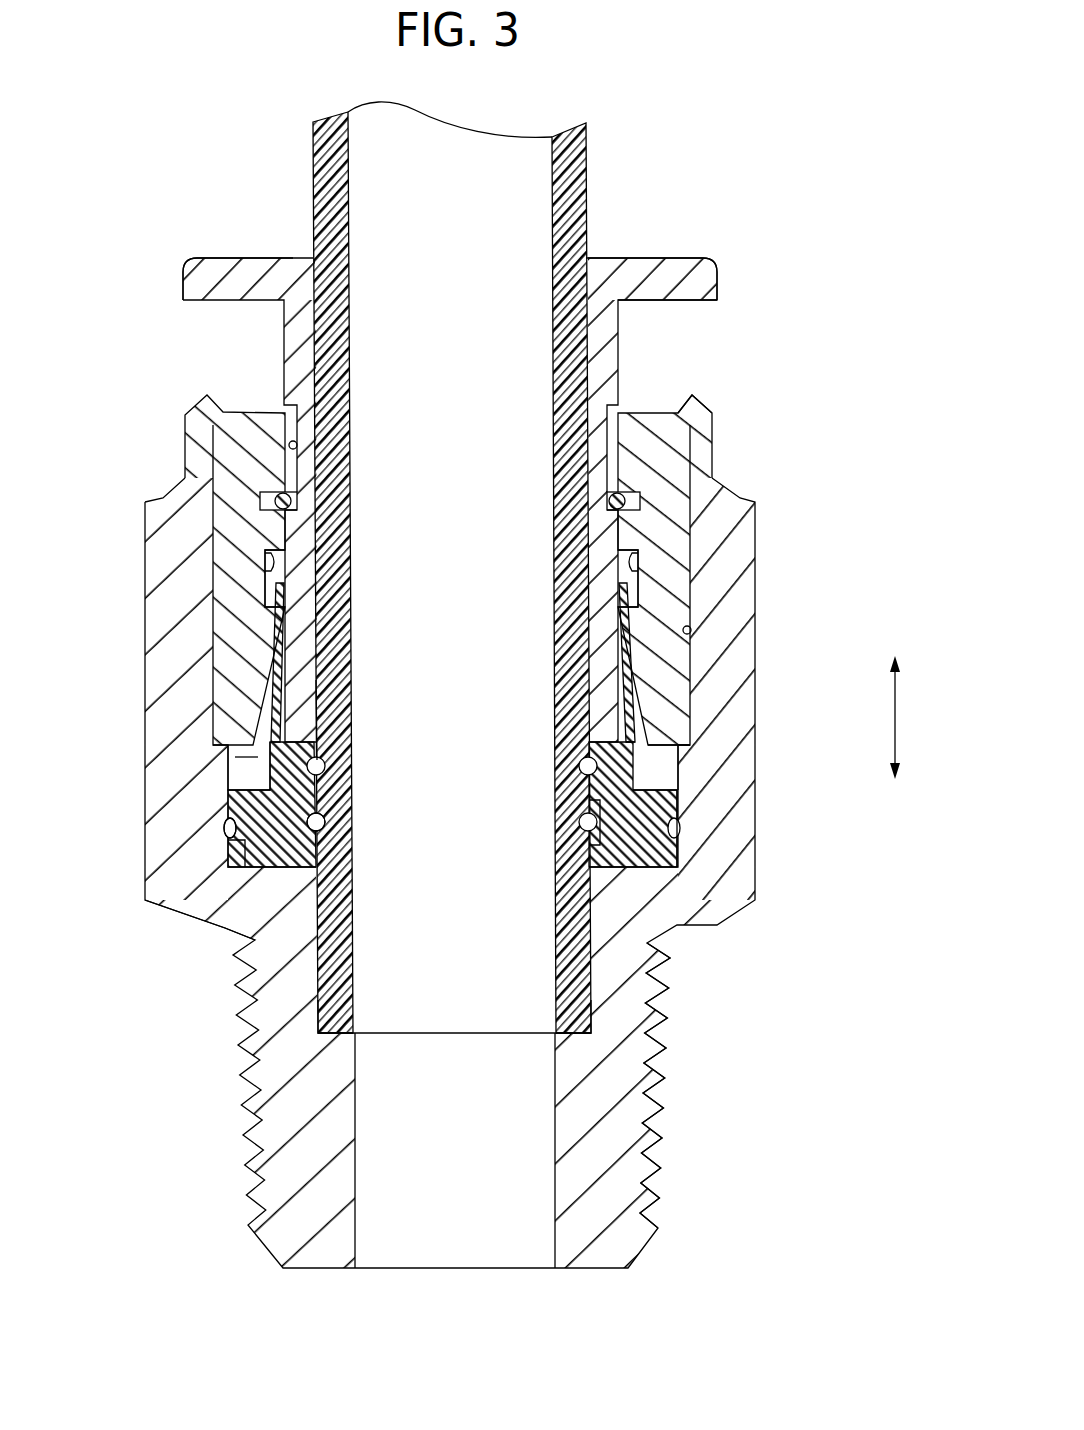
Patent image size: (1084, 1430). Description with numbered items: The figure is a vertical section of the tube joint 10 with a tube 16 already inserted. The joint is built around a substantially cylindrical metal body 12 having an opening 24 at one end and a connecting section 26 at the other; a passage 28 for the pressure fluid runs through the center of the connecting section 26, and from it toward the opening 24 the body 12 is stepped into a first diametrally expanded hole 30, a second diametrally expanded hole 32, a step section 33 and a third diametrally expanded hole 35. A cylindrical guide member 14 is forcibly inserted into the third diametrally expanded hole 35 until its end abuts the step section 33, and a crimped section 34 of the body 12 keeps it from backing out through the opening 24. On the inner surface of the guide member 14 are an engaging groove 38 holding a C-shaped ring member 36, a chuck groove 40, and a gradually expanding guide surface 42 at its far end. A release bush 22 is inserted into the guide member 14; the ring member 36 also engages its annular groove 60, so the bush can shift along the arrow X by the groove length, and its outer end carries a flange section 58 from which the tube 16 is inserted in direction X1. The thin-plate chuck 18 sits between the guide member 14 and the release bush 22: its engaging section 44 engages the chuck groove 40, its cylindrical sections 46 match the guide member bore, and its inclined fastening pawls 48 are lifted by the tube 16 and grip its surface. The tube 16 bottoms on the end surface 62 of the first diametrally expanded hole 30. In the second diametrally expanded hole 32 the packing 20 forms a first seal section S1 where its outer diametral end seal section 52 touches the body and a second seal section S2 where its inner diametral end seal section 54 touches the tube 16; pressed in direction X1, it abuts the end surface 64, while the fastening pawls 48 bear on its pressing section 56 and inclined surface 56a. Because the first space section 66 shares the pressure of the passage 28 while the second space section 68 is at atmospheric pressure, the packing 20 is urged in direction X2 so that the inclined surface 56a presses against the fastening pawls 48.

The tube joint 10 is at (757, 165).
The body 12 is at (757, 550).
The guide member 14 is at (692, 522).
The tube 16 is at (497, 160).
The chuck 18 is at (330, 700).
The packing 20 is at (240, 800).
The release bush 22 is at (716, 264).
The opening 24 is at (210, 452).
The connecting section 26 is at (656, 1140).
The passage 28 is at (550, 1190).
The first diametrally expanded hole 30 is at (592, 1000).
The second diametrally expanded hole 32 is at (690, 765).
The step section 33 is at (690, 745).
The crimped section 34 is at (694, 404).
The third diametrally expanded hole 35 is at (691, 630).
The ring member 36 is at (610, 500).
The engaging groove 38 is at (275, 501).
The chuck groove 40 is at (268, 560).
The guide surface 42 is at (690, 718).
The engaging section 44 is at (270, 592).
The cylindrical section 46 is at (278, 650).
The fastening pawl 48 is at (310, 775).
The outer diametral end seal section 52 is at (678, 832).
The inner diametral end seal section 54 is at (590, 822).
The pressing section 56 is at (603, 757).
The inclined surface 56a is at (600, 780).
The flange section 58 is at (248, 258).
The annular groove 60 is at (297, 445).
The end surface 62 is at (320, 1000).
The end surface 64 is at (232, 848).
The first space section 66 is at (237, 880).
The second space section 68 is at (248, 757).
The first seal section S1 is at (226, 822).
The second seal section S2 is at (325, 812).
The arrow X is at (905, 717).
The arrow X1 is at (895, 800).
The arrow X2 is at (895, 637).